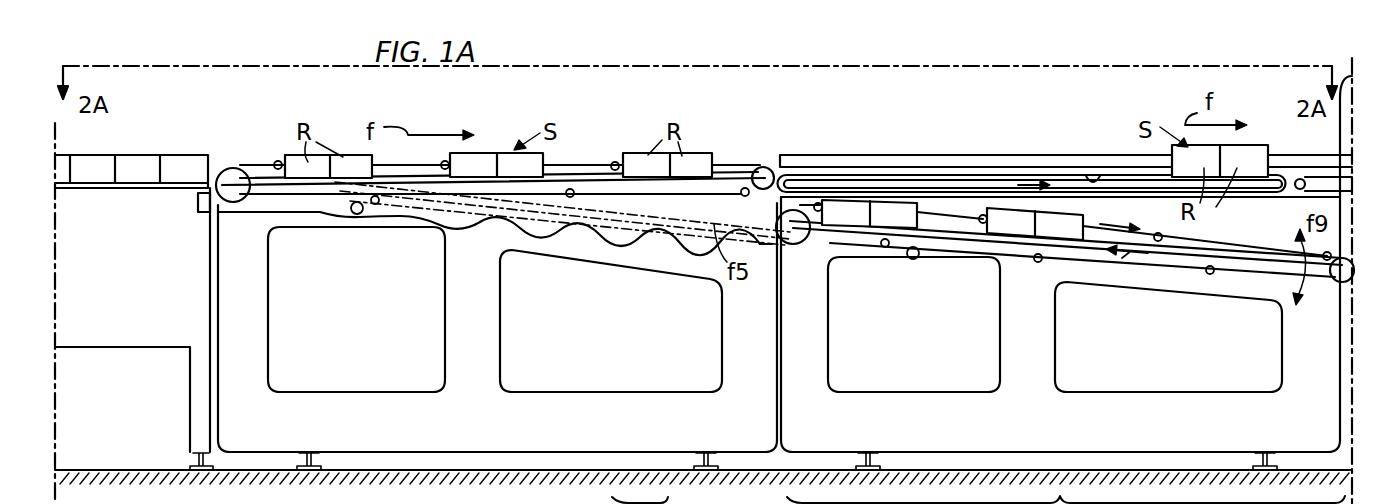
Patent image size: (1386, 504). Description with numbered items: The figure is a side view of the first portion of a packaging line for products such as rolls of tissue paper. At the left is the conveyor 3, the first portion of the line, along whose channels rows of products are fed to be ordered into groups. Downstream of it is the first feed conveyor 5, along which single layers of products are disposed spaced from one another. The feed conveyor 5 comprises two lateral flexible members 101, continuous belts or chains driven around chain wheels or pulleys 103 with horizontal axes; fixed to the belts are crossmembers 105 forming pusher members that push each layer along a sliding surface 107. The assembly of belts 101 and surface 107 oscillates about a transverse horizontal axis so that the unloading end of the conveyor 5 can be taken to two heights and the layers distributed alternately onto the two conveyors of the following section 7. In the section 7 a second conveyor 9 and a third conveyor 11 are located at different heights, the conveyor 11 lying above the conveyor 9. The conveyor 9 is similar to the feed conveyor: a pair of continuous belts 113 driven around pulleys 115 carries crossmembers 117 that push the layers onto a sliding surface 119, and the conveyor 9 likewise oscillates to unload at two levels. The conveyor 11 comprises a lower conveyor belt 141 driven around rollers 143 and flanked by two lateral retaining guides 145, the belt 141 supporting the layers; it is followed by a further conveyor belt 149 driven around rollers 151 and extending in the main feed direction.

The conveyor 3 is at (130, 124).
The first feed conveyor 5 is at (745, 120).
The section 7 is at (1114, 114).
The second conveyor 9 is at (1016, 270).
The third conveyor 11 is at (1316, 129).
The lateral flexible members 101 is at (735, 175).
The chain wheels or pulleys 103 is at (230, 168).
The crossmembers 105 is at (278, 161).
The sliding surface 107 is at (278, 187).
The continuous belts 113 is at (1077, 240).
The pulleys 115 is at (797, 244).
The crossmembers 117 is at (822, 211).
The sliding surface 119 is at (982, 224).
The lower conveyor belt 141 is at (1092, 178).
The rollers 143 is at (792, 182).
The lateral retaining guides 145 is at (965, 160).
The conveyor belt 149 is at (1300, 178).
The rollers 151 is at (1297, 190).